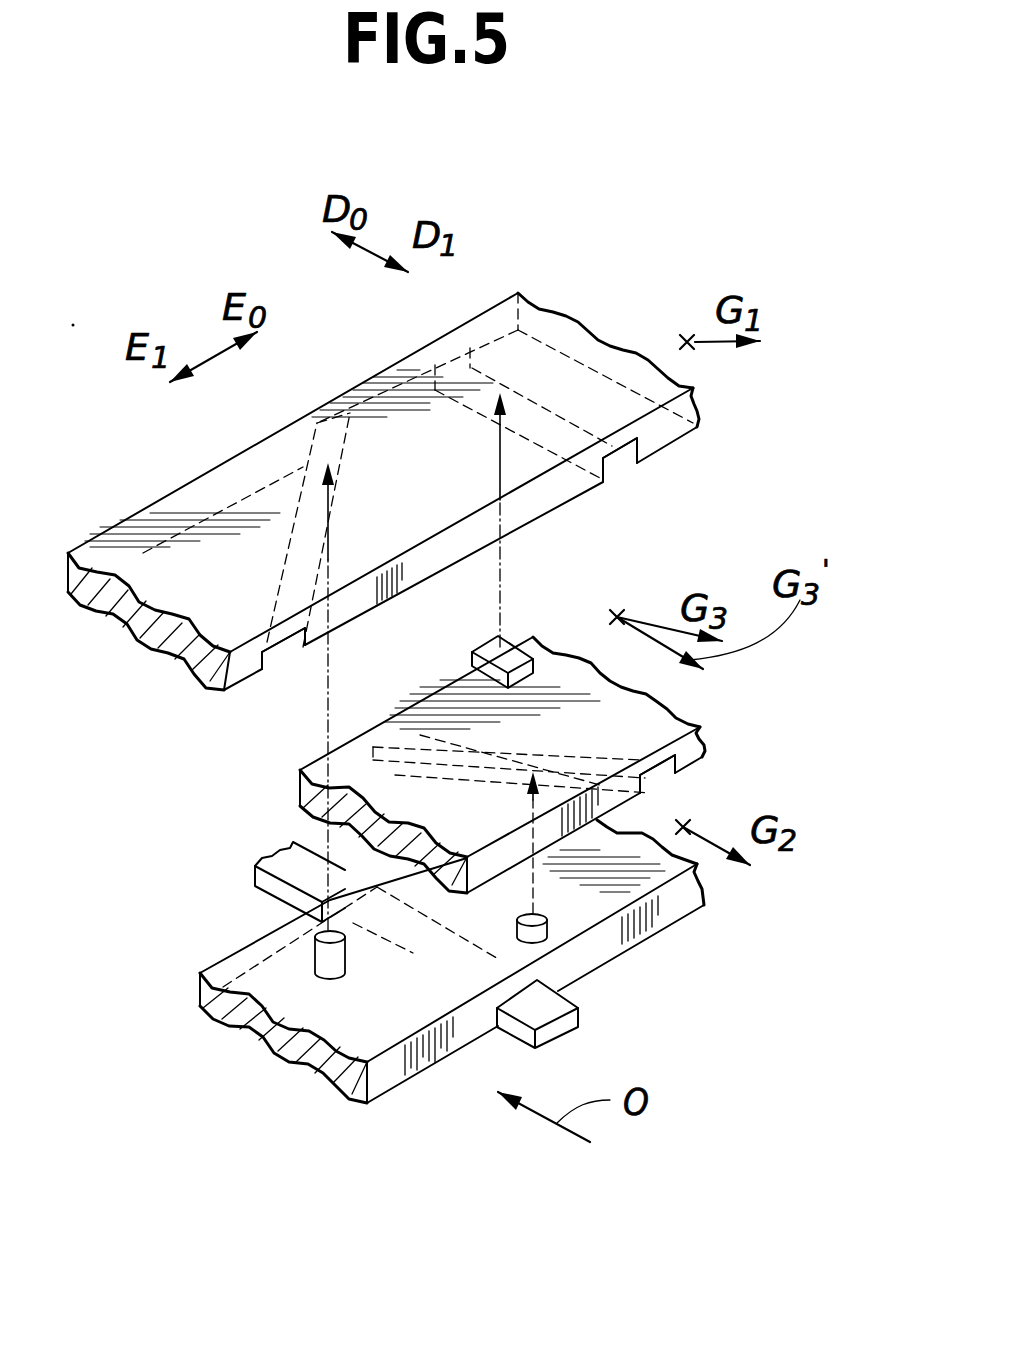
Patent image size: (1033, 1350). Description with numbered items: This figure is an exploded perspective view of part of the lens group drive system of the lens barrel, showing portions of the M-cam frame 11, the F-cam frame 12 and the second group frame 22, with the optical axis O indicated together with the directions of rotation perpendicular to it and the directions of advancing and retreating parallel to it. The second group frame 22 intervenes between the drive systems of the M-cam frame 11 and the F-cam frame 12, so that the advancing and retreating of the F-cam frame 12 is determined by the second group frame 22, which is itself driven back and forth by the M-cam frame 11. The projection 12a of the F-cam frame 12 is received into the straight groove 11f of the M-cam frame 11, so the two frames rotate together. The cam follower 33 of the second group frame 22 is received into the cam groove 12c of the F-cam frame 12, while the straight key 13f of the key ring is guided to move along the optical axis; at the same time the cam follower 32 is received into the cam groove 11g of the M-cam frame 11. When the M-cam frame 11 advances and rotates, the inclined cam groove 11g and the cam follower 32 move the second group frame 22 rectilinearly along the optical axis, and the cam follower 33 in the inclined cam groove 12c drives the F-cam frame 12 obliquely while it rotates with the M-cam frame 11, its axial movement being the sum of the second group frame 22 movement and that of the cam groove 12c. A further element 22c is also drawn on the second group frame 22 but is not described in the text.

The M-cam frame 11 is at (613, 343).
The straight groove 11f is at (613, 457).
The cam groove 11g is at (287, 652).
The F-cam frame 12 is at (645, 692).
The projection 12a is at (507, 647).
The cam groove 12c is at (660, 785).
The straight key 13f is at (272, 857).
The second group frame 22 is at (700, 862).
The projection of lower plate 22c is at (493, 1015).
The cam follower 32 is at (318, 962).
The cam follower 33 is at (560, 928).